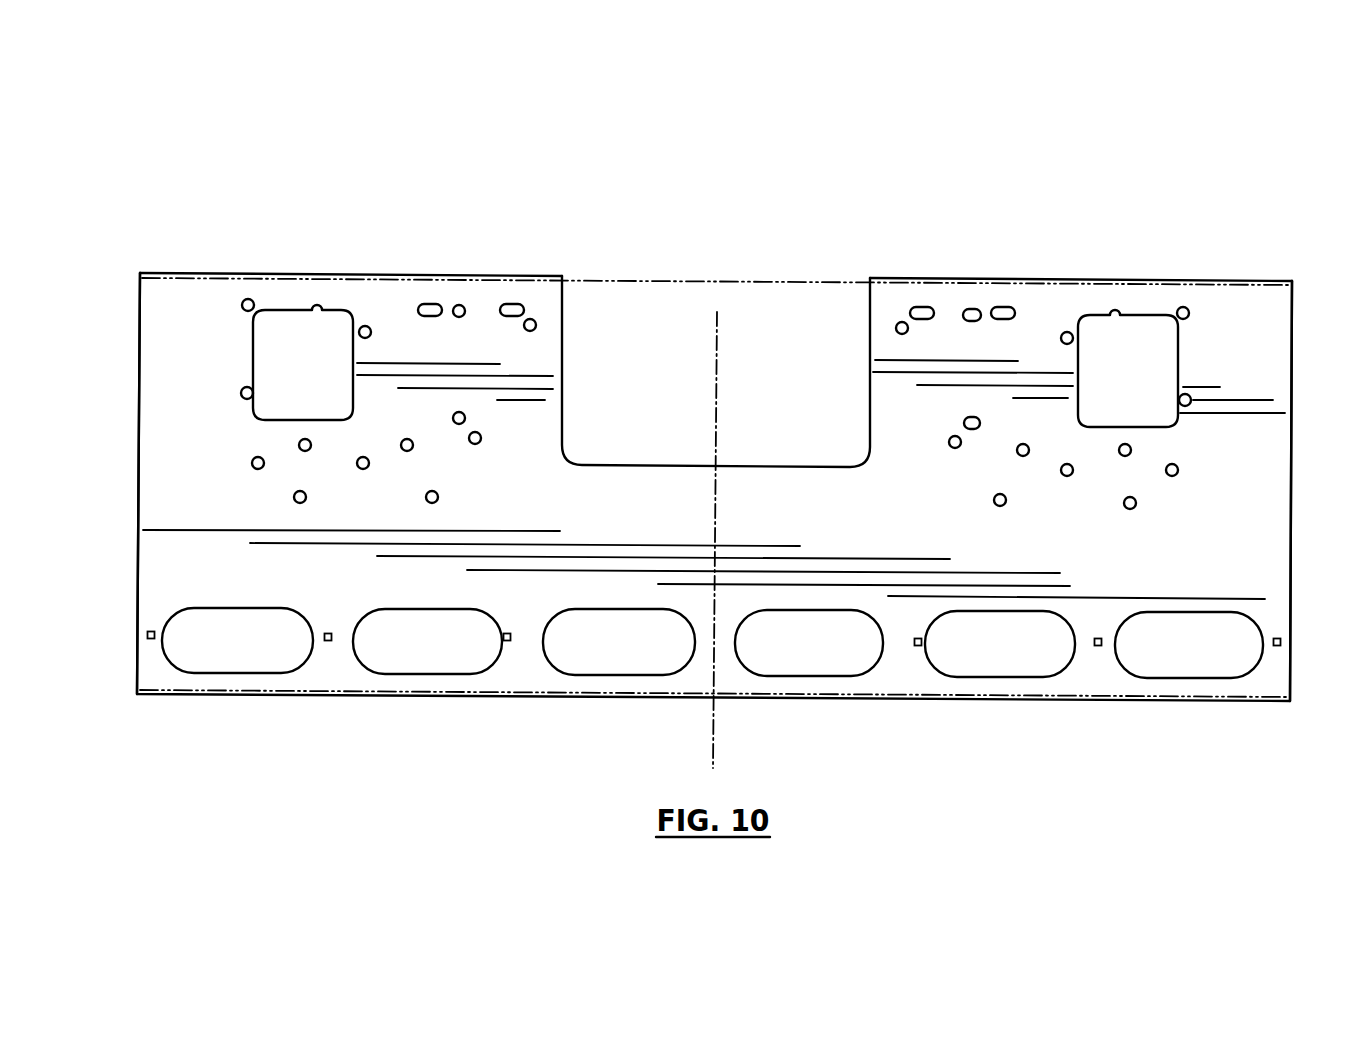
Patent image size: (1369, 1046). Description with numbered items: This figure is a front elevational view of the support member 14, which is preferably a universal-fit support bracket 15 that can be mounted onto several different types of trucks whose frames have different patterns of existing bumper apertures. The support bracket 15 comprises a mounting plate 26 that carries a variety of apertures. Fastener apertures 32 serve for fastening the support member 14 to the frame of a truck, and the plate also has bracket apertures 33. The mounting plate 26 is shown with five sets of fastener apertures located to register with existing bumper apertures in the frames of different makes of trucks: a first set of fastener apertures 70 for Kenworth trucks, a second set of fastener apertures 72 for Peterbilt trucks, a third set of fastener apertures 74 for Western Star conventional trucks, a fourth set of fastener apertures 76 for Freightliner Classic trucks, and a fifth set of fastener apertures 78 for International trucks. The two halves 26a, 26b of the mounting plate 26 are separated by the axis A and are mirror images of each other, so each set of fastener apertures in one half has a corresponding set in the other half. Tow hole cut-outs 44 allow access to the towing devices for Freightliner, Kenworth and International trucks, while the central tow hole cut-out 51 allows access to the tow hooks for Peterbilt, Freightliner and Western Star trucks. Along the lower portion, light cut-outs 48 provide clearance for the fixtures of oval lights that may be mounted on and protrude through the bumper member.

The support member 14 is at (684, 230).
The support bracket 15 is at (548, 702).
The mounting plate 26 is at (1296, 478).
The half of mounting plate 26a is at (160, 595).
The half of mounting plate 26b is at (1268, 582).
The fastener apertures 32 is at (243, 396).
The bracket apertures 33 is at (917, 648).
The tow hole cut-outs 44 is at (270, 408).
The light cut-outs 48 is at (290, 650).
The central tow hole cut-out 51 is at (627, 352).
The first set of fastener apertures 70 is at (251, 392).
The second set of fastener apertures 72 is at (1023, 445).
The third set of fastener apertures 74 is at (462, 413).
The fourth set of fastener apertures 76 is at (924, 308).
The fifth set of fastener apertures 78 is at (366, 330).
The axis A is at (718, 327).